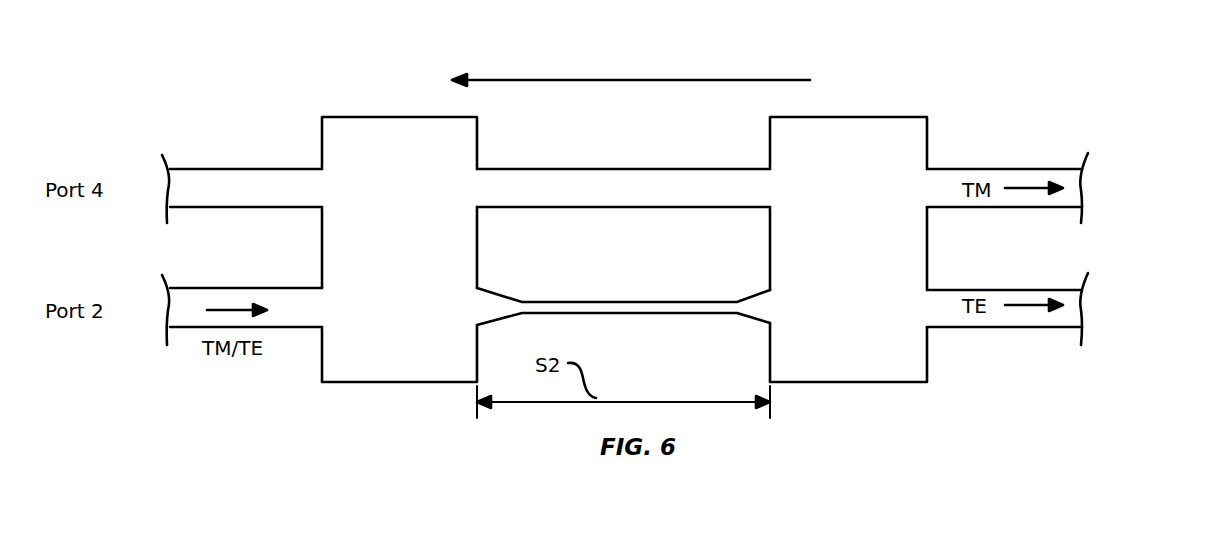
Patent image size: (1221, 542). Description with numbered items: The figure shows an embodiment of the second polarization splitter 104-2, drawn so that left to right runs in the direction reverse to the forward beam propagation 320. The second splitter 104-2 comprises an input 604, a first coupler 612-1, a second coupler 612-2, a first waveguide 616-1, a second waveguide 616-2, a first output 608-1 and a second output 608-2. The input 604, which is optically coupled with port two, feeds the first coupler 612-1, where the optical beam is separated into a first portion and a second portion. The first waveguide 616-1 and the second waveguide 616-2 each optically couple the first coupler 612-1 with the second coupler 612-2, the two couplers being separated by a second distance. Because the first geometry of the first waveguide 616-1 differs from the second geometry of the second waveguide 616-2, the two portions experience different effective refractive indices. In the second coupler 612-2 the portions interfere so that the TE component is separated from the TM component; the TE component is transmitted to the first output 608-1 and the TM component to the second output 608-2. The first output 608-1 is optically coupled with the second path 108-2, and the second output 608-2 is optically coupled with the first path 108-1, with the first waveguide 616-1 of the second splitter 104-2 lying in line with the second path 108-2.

The second polarization splitter 104-2 is at (945, 83).
The forward beam propagation 320 is at (637, 80).
The input 604 is at (285, 293).
The first coupler 612-1 is at (350, 372).
The second coupler 612-2 is at (823, 372).
The first waveguide 616-1 is at (741, 310).
The second waveguide 616-2 is at (744, 195).
The first output 608-1 is at (1062, 322).
The second output 608-2 is at (1067, 200).
The first path 108-1 is at (1134, 188).
The second path 108-2 is at (1134, 309).